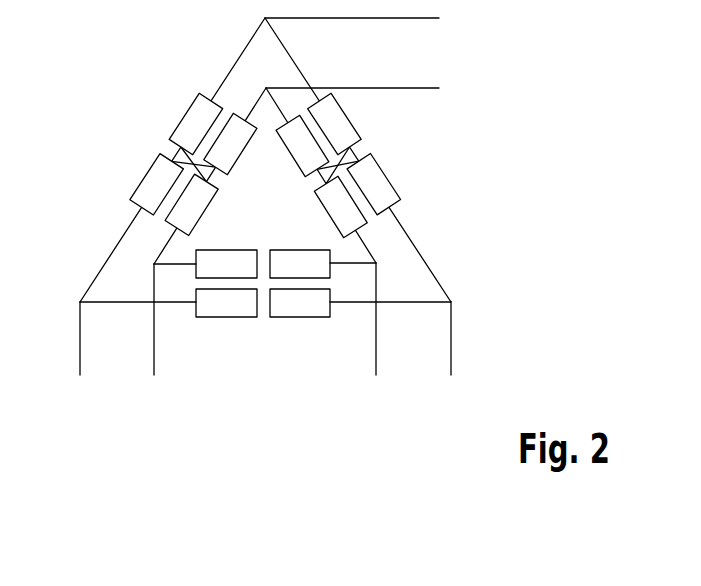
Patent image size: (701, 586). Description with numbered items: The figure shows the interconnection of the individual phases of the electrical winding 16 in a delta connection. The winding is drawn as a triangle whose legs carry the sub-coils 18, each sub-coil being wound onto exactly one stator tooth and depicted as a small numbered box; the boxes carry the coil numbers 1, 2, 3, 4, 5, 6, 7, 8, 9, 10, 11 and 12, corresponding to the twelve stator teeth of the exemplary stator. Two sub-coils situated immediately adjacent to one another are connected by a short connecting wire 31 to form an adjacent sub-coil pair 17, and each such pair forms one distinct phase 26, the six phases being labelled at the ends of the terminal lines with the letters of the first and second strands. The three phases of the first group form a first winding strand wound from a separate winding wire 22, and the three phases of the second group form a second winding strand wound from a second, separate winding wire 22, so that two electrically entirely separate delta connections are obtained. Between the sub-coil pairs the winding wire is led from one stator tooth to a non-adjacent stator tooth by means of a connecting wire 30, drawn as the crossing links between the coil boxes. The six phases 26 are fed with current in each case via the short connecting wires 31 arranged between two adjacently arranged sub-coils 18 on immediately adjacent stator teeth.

The electrical winding 16 is at (152, 95).
The sub-coil pair 17 is at (331, 283).
The sub-coil 18 is at (407, 171).
The winding wire 22 is at (288, 52).
The phase 26 is at (483, 30).
The connecting wire 30 is at (175, 150).
The short connecting wire 31 is at (238, 60).
The coil 1 is at (230, 143).
The coil 2 is at (302, 145).
The coil 3 is at (226, 264).
The coil 4 is at (191, 204).
The coil 5 is at (340, 206).
The coil 6 is at (300, 264).
The coil 7 is at (196, 123).
The coil 8 is at (335, 123).
The coil 9 is at (226, 303).
The coil 10 is at (157, 184).
The coil 11 is at (374, 184).
The coil 12 is at (300, 303).